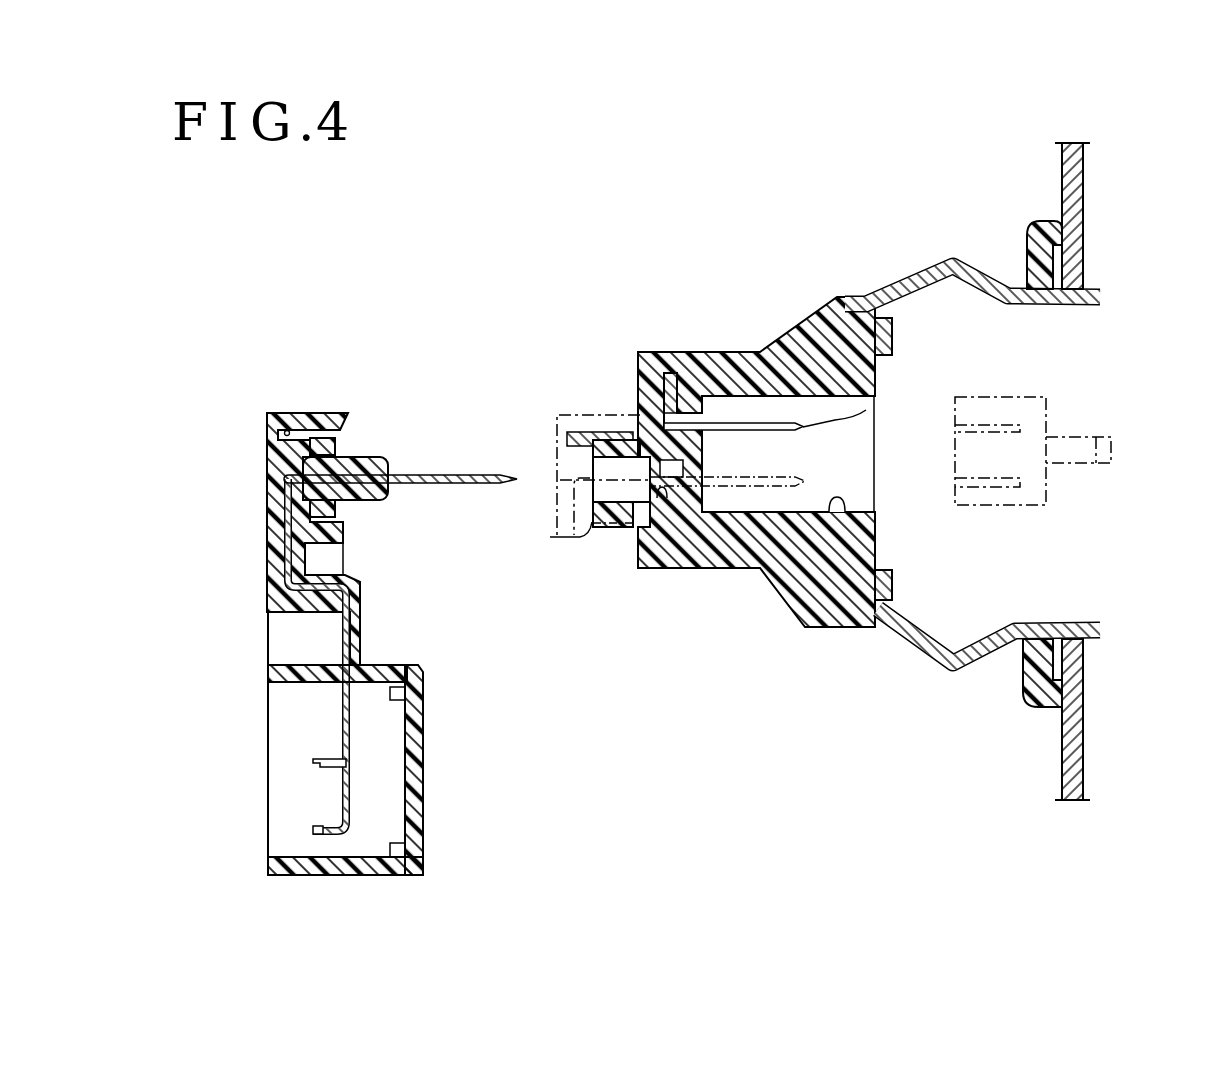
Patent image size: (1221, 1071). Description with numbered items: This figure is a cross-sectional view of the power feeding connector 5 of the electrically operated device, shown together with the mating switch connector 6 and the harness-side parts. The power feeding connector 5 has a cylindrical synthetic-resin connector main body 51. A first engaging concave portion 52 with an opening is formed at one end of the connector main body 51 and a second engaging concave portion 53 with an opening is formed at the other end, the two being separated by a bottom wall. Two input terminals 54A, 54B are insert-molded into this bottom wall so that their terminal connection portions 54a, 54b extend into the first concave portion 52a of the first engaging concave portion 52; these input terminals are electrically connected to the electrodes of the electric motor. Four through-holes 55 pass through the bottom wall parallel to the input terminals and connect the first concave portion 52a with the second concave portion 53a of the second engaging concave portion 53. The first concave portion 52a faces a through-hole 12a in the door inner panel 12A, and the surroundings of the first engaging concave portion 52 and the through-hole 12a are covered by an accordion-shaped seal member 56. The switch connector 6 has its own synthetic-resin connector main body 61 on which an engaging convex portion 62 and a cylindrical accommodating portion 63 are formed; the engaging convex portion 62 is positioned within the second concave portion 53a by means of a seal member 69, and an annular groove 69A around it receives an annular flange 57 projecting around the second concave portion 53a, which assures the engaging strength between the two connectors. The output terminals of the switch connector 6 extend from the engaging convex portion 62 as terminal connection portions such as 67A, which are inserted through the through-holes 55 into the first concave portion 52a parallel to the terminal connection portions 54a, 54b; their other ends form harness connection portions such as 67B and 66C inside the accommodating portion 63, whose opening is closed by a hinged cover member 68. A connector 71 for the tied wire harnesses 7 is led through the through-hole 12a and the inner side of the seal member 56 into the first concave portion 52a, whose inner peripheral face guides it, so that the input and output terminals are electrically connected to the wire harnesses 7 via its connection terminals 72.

The power feeding connector 5 is at (806, 448).
The switch connector 6 is at (350, 621).
The wire harnesses 7 is at (1098, 465).
The door inner panel 12A is at (1062, 762).
The through-hole 12a is at (1068, 653).
The connector main body 51 is at (800, 530).
The first engaging concave portion 52 is at (828, 368).
The first concave portion 52a is at (840, 545).
The second engaging concave portion 53 is at (652, 545).
The second concave portion 53a is at (665, 560).
The input terminal 54A is at (736, 339).
The input terminal 54B is at (740, 408).
The terminal connection portion 54a is at (927, 384).
The terminal connection portion 54b is at (866, 410).
The through-holes 55 is at (703, 562).
The seal member 56 is at (917, 662).
The annular flange 57 is at (615, 528).
The connector main body 61 is at (262, 578).
The engaging convex portion 62 is at (360, 468).
The cylindrical accommodating portion 63 is at (295, 680).
The harness connection portion 66C is at (316, 828).
The terminal connection portion 67A is at (462, 474).
The harness connection portion 67B is at (312, 766).
The cover member 68 is at (410, 775).
The seal member 69 is at (322, 442).
The annular groove 69A is at (288, 429).
The connector 71 is at (1032, 403).
The connection terminals 72 is at (1013, 490).